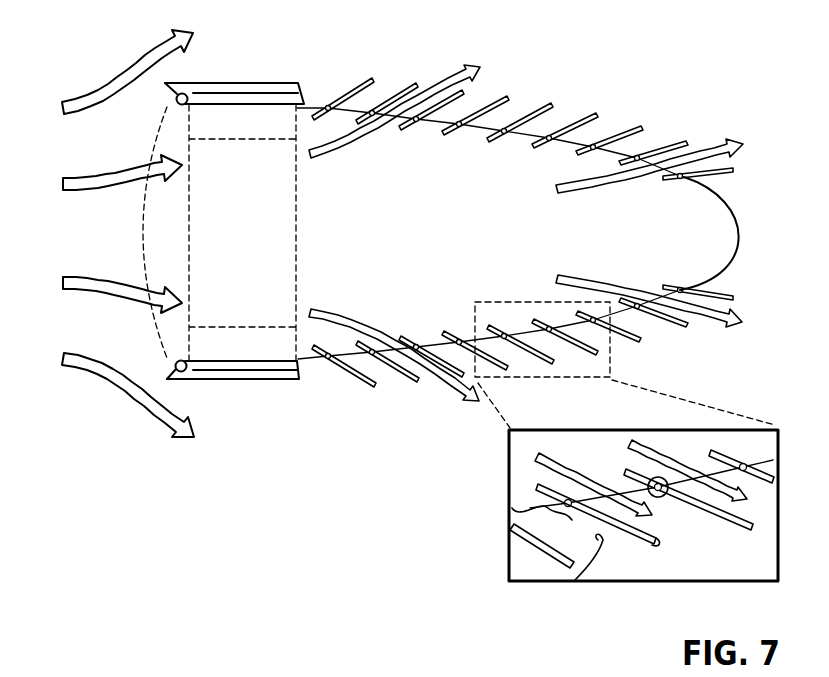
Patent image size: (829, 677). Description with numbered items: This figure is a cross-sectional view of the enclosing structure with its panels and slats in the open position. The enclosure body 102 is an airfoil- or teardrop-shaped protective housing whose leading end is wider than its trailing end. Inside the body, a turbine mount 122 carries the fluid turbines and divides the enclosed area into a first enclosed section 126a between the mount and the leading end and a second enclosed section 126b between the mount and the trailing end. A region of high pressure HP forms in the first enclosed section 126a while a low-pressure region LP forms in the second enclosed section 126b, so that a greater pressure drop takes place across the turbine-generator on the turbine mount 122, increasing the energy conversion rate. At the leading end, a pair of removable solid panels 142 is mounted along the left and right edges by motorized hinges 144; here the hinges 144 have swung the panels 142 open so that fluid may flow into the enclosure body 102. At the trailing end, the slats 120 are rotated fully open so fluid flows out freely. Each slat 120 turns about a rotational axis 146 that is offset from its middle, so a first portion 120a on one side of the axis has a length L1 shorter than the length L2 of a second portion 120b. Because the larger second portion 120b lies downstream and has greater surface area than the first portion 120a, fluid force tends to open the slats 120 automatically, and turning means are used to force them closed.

The enclosure body 102 is at (490, 88).
The slat 120 is at (594, 500).
The first portion 120a is at (548, 490).
The second portion 120b is at (658, 540).
The turbine mount 122 is at (297, 128).
The first enclosed section 126a is at (168, 128).
The second enclosed section 126b is at (535, 182).
The removable solid panel 142 is at (217, 80).
The motorized hinge 144 is at (189, 93).
The rotational axis 146 is at (665, 477).
The length of first portion L1 is at (530, 523).
The length of second portion L2 is at (575, 580).